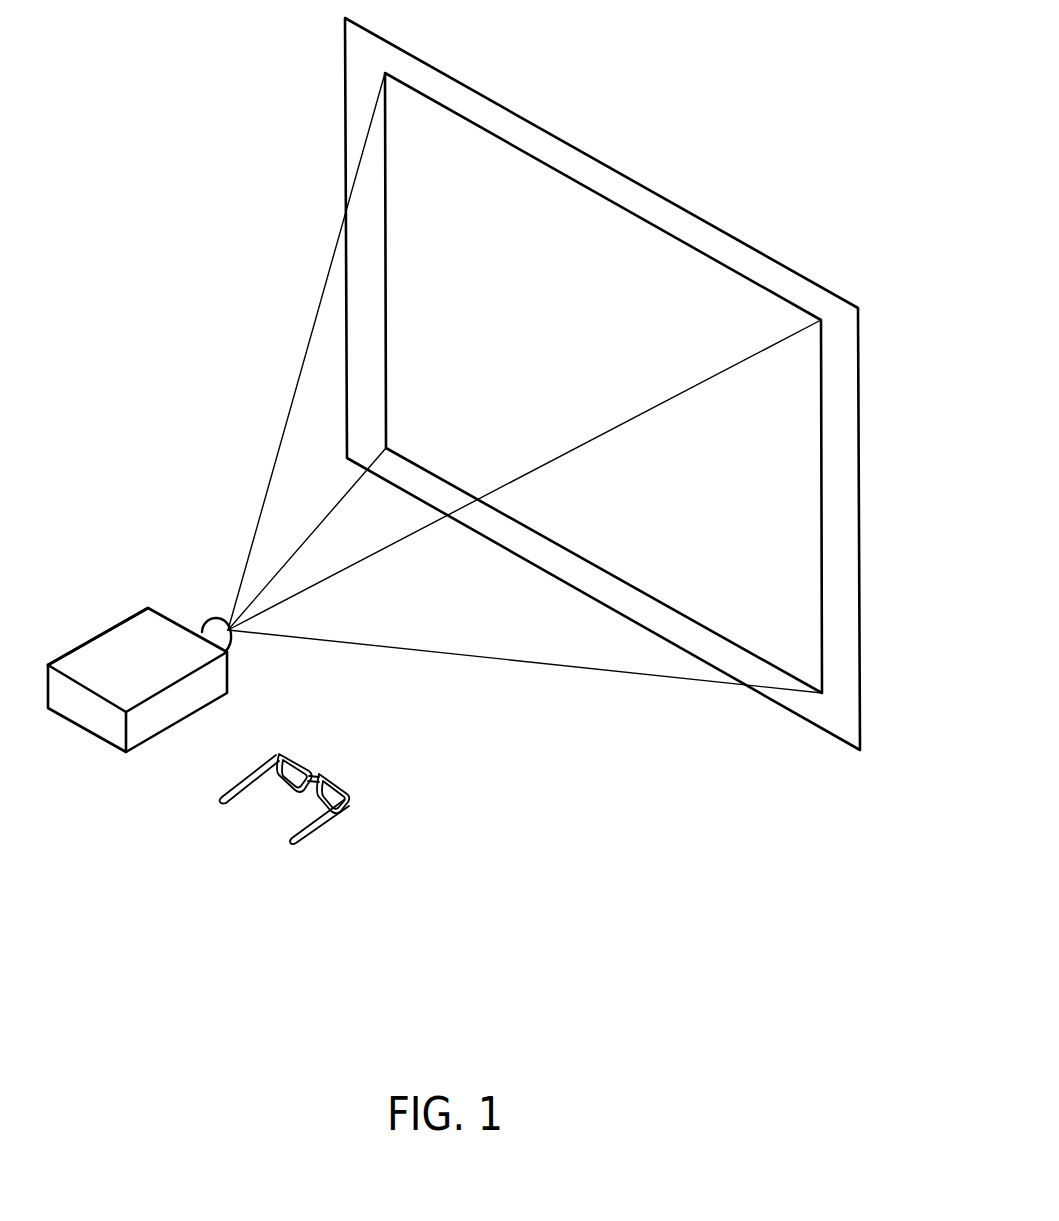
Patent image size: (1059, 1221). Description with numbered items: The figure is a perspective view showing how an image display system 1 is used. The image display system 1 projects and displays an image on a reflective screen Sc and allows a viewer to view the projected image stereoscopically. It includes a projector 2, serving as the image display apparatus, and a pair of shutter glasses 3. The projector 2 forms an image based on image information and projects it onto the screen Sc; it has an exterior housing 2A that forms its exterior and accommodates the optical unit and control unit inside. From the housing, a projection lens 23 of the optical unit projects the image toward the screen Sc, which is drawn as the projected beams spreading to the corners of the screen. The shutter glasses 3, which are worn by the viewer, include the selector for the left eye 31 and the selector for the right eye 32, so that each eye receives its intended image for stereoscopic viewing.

The reflective screen Sc is at (490, 117).
The image display system 1 is at (155, 830).
The projector 2 is at (144, 686).
The exterior housing 2A is at (108, 645).
The projection lens 23 is at (203, 630).
The shutter glasses 3 is at (240, 813).
The selector for the left eye 31 is at (270, 782).
The selector for the right eye 32 is at (320, 794).